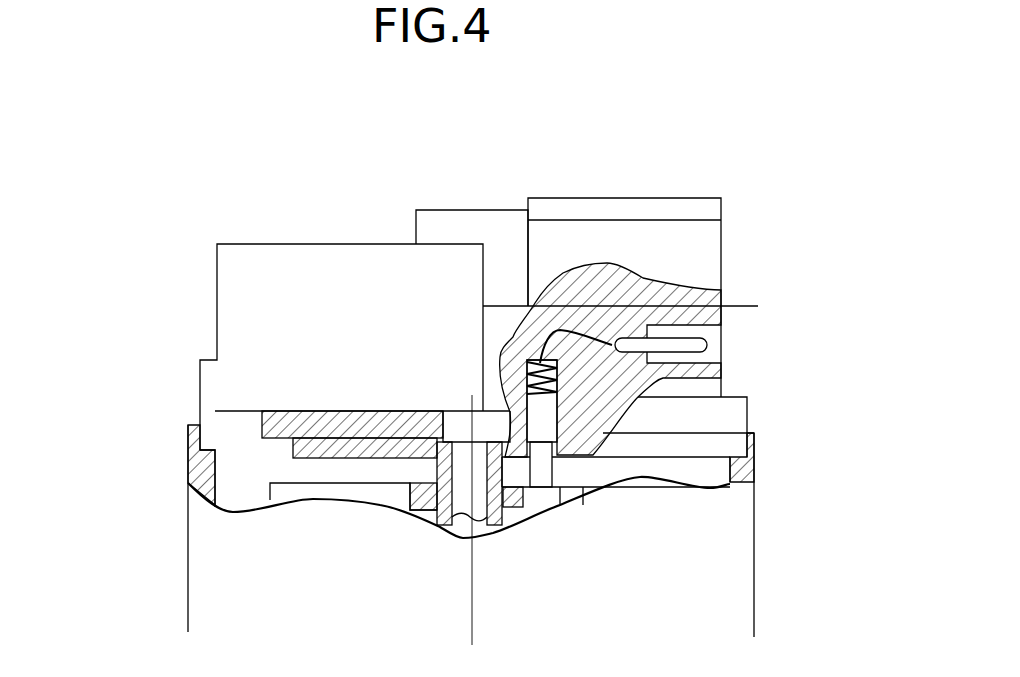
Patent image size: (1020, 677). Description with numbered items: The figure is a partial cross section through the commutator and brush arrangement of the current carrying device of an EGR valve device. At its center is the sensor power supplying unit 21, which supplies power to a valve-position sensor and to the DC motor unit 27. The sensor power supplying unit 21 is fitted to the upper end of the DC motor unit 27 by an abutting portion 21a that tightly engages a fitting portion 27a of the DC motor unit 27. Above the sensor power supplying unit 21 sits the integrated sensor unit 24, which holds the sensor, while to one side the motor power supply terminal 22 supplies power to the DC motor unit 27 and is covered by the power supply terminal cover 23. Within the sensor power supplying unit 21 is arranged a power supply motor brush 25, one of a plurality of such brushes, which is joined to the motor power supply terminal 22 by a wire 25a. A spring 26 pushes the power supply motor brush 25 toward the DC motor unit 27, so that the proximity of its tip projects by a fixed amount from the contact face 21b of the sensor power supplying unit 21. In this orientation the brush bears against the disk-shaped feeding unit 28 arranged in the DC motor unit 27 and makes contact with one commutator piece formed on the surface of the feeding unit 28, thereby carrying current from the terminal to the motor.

The sensor power supplying unit 21 is at (167, 265).
The abutting portion 21a is at (205, 432).
The contact face 21b is at (693, 467).
The motor power supply terminal 22 is at (703, 346).
The power supply terminal cover 23 is at (680, 198).
The integrated sensor unit 24 is at (320, 300).
The power supply motor brush 25 is at (543, 465).
The wire 25a is at (612, 347).
The spring 26 is at (530, 360).
The DC motor unit 27 is at (754, 537).
The fitting portion 27a is at (187, 462).
The feeding unit 28 is at (400, 498).